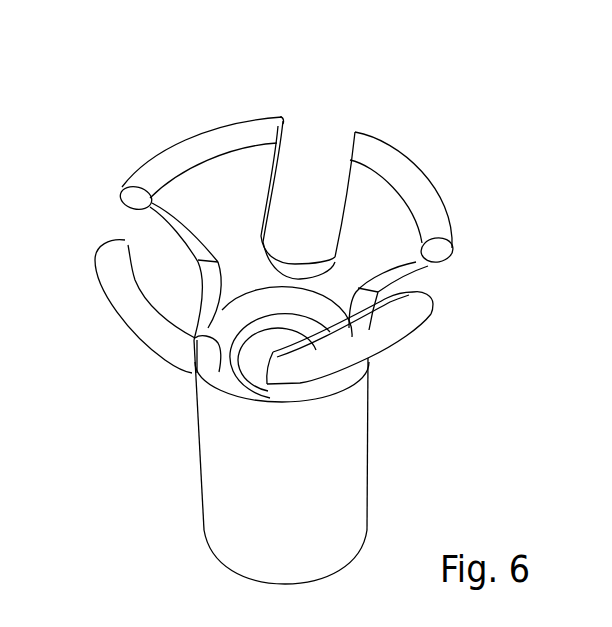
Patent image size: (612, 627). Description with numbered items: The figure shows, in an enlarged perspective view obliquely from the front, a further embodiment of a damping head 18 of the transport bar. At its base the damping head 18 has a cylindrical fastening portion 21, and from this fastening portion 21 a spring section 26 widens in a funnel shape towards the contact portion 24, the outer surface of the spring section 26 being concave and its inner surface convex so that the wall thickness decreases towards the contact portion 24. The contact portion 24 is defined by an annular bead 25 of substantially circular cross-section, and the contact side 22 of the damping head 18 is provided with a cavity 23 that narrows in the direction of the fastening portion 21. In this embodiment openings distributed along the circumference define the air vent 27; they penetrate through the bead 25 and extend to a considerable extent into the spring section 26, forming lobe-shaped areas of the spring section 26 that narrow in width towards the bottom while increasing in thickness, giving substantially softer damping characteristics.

The damping head 18 is at (301, 304).
The fastening portion 21 is at (372, 449).
The contact side 22 is at (209, 127).
The cavity 23 is at (260, 353).
The contact portion 24 is at (407, 156).
The annular bead 25 is at (155, 153).
The spring section 26 is at (417, 261).
The air vent 27 is at (136, 230).